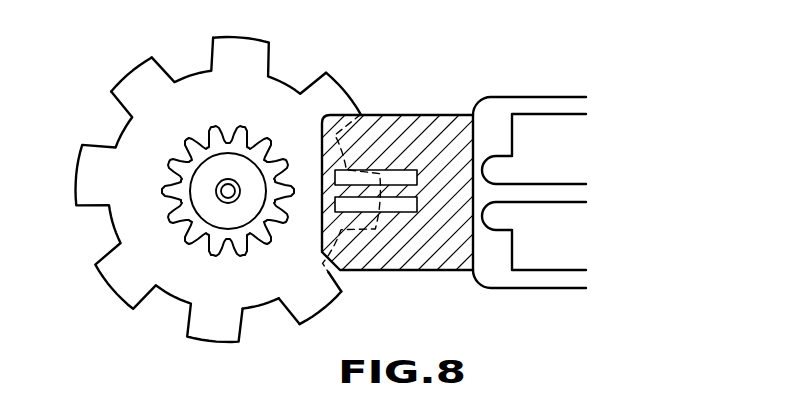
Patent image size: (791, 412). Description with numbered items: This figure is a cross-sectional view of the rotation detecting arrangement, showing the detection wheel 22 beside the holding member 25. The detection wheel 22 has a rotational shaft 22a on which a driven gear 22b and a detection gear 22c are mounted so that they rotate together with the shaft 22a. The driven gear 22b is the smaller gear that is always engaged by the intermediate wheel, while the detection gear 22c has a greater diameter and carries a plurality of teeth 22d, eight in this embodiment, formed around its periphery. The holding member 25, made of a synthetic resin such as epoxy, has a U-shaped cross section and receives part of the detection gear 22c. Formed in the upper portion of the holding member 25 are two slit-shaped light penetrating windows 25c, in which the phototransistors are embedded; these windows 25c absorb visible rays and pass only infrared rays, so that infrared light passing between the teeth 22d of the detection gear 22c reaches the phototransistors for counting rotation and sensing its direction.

The detection wheel 22 is at (220, 302).
The rotational shaft 22a is at (231, 187).
The driven gear 22b is at (188, 244).
The detection gear 22c is at (257, 290).
The teeth 22d is at (131, 85).
The holding member 25 is at (452, 114).
The light penetrating windows 25c is at (405, 170).